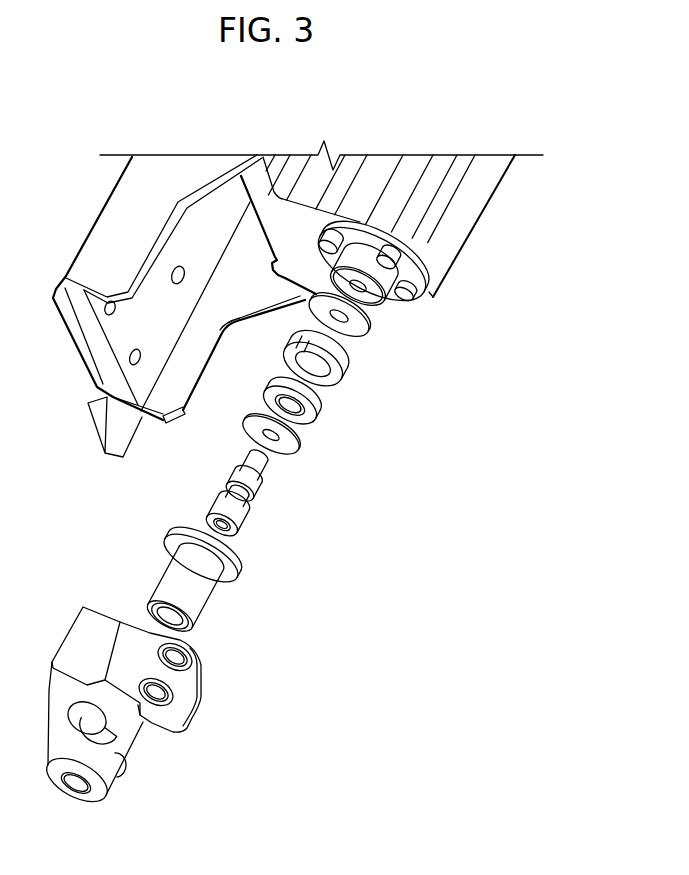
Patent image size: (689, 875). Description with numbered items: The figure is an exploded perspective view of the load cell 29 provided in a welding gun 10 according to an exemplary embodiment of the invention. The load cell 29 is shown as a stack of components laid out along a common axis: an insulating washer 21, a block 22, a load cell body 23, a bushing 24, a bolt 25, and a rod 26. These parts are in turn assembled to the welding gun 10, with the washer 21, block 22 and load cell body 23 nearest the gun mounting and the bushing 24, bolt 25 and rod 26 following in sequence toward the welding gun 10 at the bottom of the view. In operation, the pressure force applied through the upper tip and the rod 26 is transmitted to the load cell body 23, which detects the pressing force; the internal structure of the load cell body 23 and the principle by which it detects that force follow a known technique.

The welding gun 10 is at (160, 759).
The insulating washer 21 is at (363, 330).
The block 22 is at (353, 367).
The load cell body 23 is at (317, 413).
The bushing 24 is at (253, 490).
The bolt 25 is at (230, 532).
The rod 26 is at (198, 597).
The load cell 29 is at (471, 349).